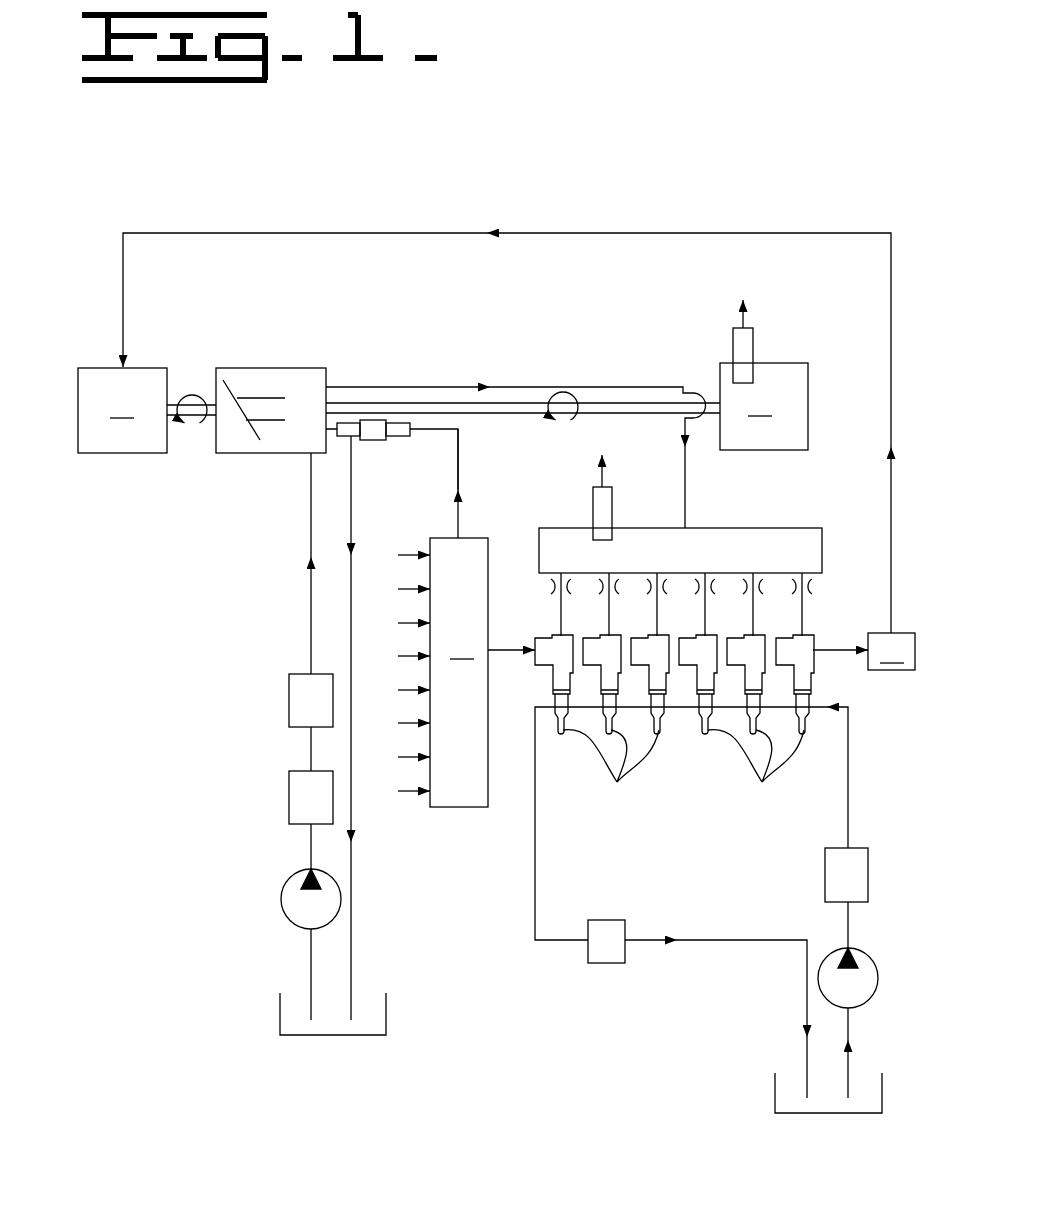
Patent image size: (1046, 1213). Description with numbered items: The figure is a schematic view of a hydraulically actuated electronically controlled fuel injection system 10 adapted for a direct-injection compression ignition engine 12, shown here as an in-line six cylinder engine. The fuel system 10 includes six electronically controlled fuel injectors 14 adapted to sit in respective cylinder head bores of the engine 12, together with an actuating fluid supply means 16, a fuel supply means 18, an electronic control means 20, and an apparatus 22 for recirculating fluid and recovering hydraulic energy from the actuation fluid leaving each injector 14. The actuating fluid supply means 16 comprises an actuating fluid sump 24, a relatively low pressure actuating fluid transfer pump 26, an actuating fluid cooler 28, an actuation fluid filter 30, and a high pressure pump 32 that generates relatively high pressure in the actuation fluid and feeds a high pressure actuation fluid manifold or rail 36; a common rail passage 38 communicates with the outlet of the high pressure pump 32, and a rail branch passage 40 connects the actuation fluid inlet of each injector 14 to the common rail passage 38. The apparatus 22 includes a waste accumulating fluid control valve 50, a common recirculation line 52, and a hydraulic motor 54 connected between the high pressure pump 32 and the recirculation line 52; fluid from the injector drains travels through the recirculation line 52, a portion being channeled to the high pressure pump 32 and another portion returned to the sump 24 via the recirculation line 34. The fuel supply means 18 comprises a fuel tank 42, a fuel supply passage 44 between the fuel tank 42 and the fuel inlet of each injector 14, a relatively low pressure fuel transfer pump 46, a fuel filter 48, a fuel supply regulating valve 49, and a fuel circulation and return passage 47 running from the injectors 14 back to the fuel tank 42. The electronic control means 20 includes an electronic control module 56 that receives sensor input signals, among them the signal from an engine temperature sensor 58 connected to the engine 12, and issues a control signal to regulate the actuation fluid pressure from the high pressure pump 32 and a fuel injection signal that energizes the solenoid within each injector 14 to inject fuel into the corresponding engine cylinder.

The hydraulically actuated electronically controlled fuel injection system 10 is at (217, 207).
The direct-injection compression ignition engine 12 is at (764, 406).
The electronically controlled fuel injectors 14 is at (674, 719).
The actuating fluid supply means 16 is at (343, 1060).
The fuel supply means 18 is at (832, 1125).
The electronic control means 20 is at (456, 810).
The apparatus for recirculating fluid and recovering hydraulic energy 22 is at (92, 270).
The actuating fluid sump 24 is at (386, 1010).
The low pressure actuating fluid transfer pump 26 is at (290, 900).
The actuating fluid cooler 28 is at (297, 790).
The actuation fluid filter 30 is at (297, 713).
The high pressure pump 32 is at (272, 453).
The recirculation line 34 is at (353, 915).
The high pressure actuation fluid manifold or rail 36 is at (727, 527).
The common rail passage 38 is at (580, 528).
The rail branch passage 40 is at (802, 603).
The fuel tank 42 is at (775, 1095).
The fuel supply passage 44 is at (848, 823).
The low pressure fuel transfer pump 46 is at (870, 958).
The fuel circulation and return passage 47 is at (807, 1010).
The fuel filter 48 is at (855, 868).
The fuel supply regulating valve 49 is at (605, 963).
The waste accumulating fluid control valve 50 is at (864, 651).
The common recirculation line 52 is at (307, 235).
The hydraulic motor 54 is at (147, 410).
The electronic control module 56 is at (449, 618).
The engine temperature sensor 58 is at (753, 350).